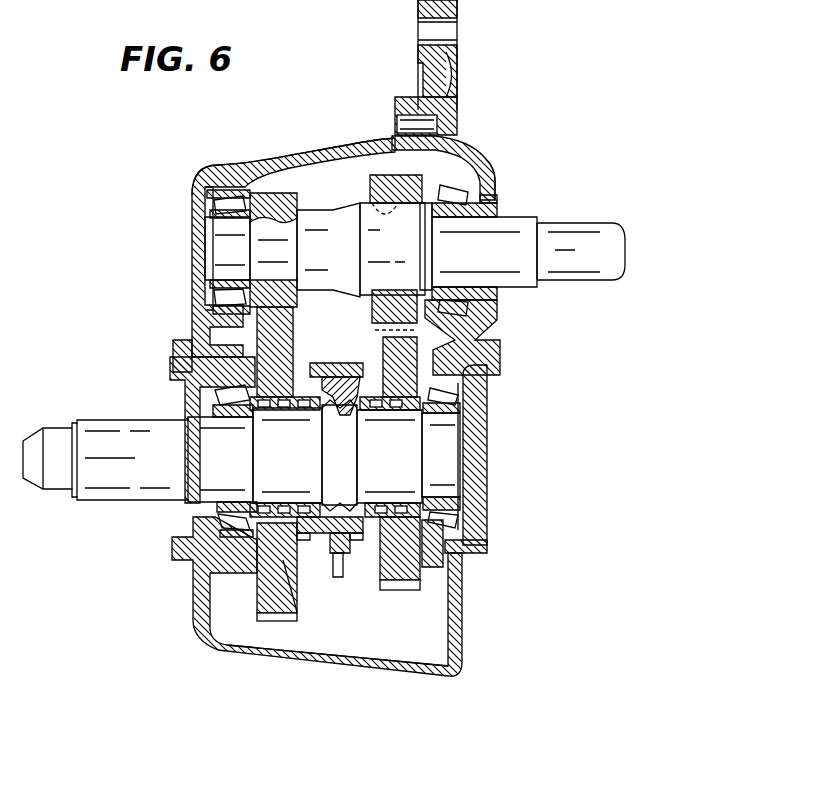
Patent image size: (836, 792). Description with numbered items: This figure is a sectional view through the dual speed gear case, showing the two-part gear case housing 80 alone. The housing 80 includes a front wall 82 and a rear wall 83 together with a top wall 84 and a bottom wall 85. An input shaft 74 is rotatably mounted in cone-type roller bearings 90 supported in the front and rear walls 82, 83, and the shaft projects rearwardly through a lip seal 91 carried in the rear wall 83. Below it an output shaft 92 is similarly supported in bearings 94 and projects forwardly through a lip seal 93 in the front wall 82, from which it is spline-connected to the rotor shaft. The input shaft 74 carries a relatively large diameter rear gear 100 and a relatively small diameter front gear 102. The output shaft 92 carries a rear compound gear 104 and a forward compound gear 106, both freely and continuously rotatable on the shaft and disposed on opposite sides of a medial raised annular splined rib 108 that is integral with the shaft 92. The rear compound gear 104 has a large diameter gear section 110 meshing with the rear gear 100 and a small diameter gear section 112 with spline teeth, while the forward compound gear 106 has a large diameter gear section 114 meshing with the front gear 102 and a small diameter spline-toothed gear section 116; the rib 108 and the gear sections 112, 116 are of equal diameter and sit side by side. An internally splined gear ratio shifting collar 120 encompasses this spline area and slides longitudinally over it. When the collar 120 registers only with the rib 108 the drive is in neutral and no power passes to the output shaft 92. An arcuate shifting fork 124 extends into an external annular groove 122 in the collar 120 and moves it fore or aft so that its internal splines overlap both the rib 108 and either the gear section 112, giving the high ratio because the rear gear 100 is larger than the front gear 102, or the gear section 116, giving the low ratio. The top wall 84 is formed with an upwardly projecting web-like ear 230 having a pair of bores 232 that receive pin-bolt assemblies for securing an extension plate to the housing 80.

The input shaft 74 is at (565, 240).
The gear case housing 80 is at (180, 230).
The front wall 82 is at (190, 288).
The rear wall 83 is at (482, 440).
The top wall 84 is at (320, 152).
The bottom wall 85 is at (330, 672).
The roller bearings 90 is at (210, 178).
The lip seal 91 is at (498, 306).
The output shaft 92 is at (130, 440).
The lip seal 93 is at (190, 510).
The bearings 94 is at (190, 360).
The rear gear 100 is at (420, 178).
The front gear 102 is at (272, 198).
The rear compound gear 104 is at (420, 570).
The forward compound gear 106 is at (262, 578).
The raised annular splined rib 108 is at (345, 473).
The large diameter gear section 110 is at (395, 565).
The small diameter gear section 112 is at (348, 555).
The large diameter gear section 114 is at (285, 590).
The small diameter gear section 116 is at (304, 540).
The gear ratio shifting collar 120 is at (348, 368).
The external annular groove 122 is at (332, 370).
The shifting fork 124 is at (338, 575).
The ear 230 is at (450, 58).
The bores 232 is at (457, 100).